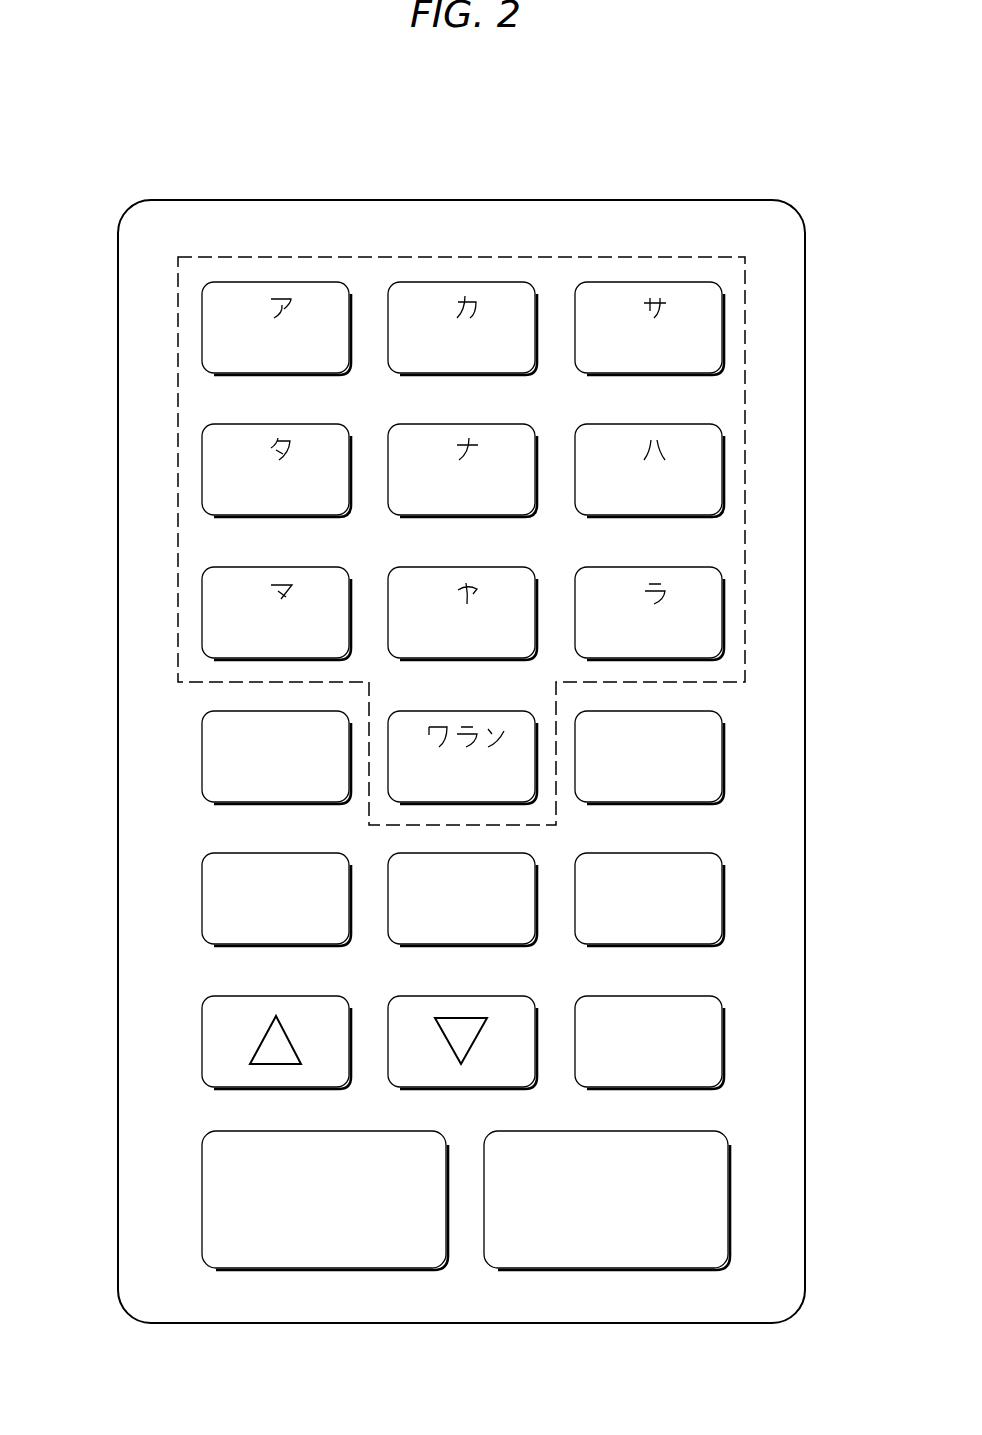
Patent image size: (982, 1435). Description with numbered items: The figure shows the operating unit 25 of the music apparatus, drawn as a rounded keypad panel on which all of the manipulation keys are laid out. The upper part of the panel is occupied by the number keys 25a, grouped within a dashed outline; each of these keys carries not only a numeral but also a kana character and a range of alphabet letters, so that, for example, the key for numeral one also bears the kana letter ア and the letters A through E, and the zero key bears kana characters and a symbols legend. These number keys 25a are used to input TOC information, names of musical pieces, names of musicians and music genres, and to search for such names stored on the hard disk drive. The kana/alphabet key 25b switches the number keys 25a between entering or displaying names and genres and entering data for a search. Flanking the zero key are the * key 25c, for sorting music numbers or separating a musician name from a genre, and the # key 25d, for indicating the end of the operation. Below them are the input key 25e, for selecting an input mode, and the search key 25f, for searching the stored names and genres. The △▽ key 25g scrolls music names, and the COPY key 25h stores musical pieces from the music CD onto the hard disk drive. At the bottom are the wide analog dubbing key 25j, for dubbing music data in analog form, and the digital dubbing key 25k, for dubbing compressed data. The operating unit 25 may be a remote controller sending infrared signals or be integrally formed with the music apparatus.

The operating unit 25 is at (488, 166).
The number keys 25a is at (745, 502).
The kana/alphabet key 25b is at (462, 947).
The * key 25c is at (202, 759).
The # key 25d is at (723, 753).
The input key 25e is at (202, 901).
The search key 25f is at (723, 896).
The △▽ key 25g is at (202, 1046).
The COPY key 25h is at (723, 1038).
The analog dubbing key 25j is at (202, 1207).
The digital dubbing key 25k is at (730, 1196).